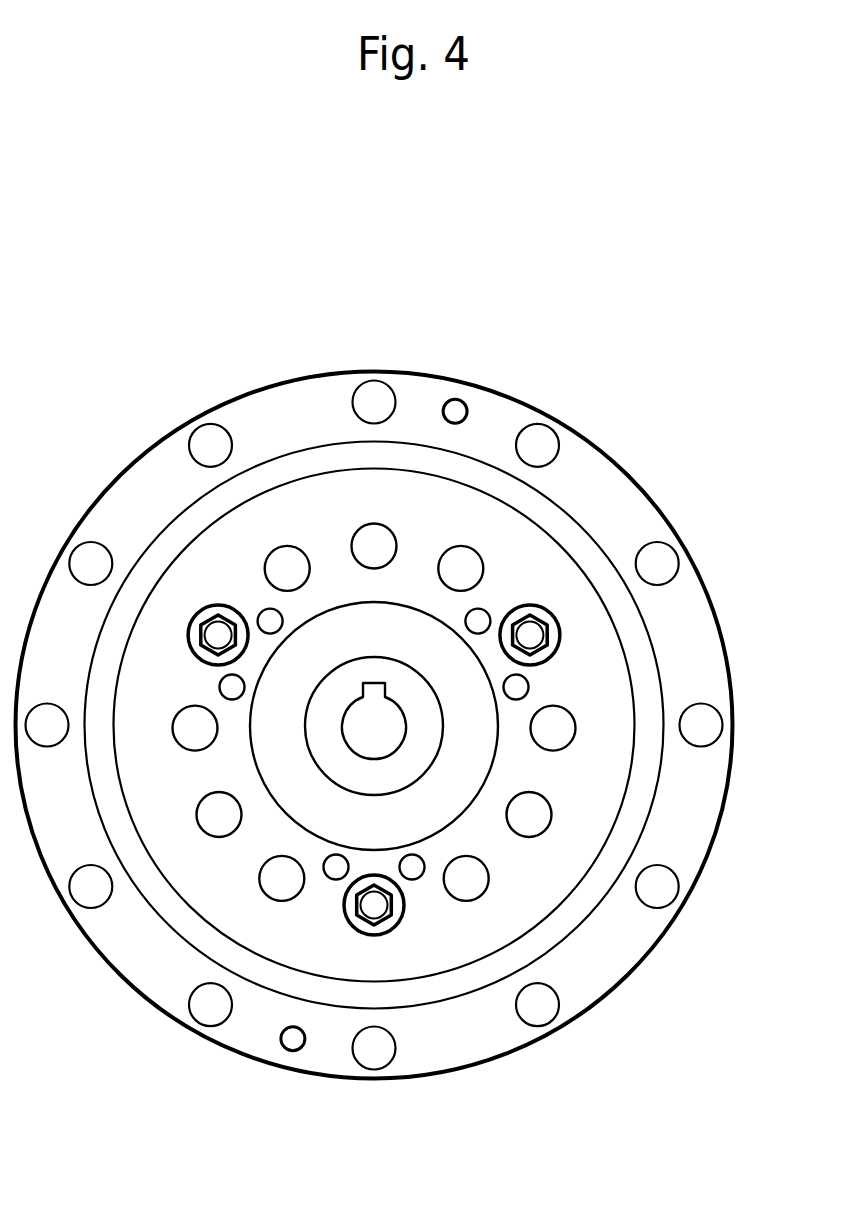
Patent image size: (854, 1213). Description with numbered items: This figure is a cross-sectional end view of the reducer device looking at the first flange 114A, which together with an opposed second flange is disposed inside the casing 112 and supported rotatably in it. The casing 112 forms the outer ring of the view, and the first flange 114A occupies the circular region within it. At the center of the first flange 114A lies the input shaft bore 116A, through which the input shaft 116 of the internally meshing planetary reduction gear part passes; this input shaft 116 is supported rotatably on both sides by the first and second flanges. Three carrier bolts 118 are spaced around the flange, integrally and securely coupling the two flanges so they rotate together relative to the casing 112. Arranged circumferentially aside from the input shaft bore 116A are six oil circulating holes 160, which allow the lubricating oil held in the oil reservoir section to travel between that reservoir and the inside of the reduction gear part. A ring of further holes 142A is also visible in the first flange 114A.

The casing 112 is at (622, 495).
The first flange 114A is at (597, 805).
The input shaft bore 116A is at (340, 610).
The input shaft 116 is at (392, 780).
The carrier bolt 118 is at (217, 632).
The holes 142A is at (460, 558).
The oil circulating holes 160 is at (267, 615).